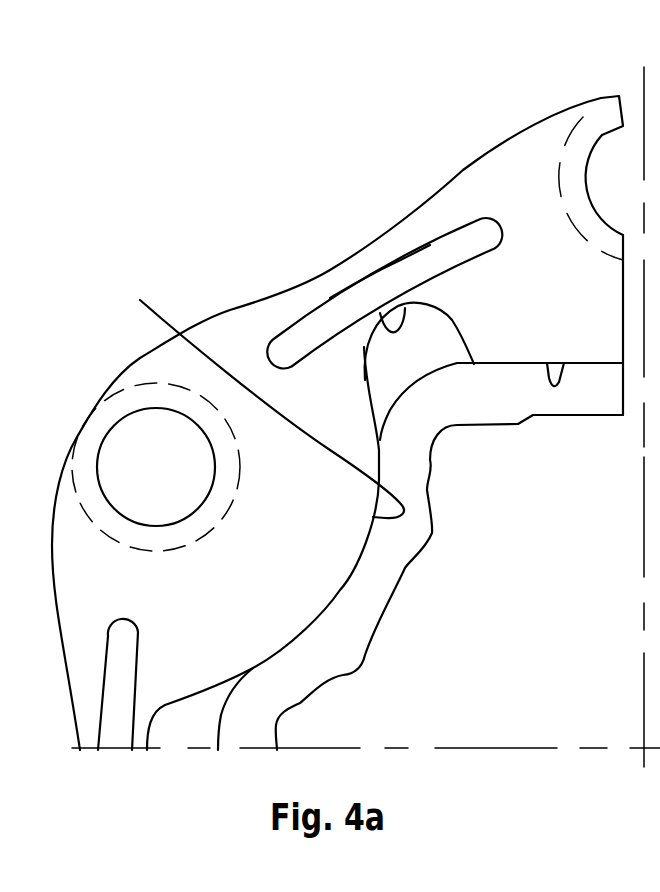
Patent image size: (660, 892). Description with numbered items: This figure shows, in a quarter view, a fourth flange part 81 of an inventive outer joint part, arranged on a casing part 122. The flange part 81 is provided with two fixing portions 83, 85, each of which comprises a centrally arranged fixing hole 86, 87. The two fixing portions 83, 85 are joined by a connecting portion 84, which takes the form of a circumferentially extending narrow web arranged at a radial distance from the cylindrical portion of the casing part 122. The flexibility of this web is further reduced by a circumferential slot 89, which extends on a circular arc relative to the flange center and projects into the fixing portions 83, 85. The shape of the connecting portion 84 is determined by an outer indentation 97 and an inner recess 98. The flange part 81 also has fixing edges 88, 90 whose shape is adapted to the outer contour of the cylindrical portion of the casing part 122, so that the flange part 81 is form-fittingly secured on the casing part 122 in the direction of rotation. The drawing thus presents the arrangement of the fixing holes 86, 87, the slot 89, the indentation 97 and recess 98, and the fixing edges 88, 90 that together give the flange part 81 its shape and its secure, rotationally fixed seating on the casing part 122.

The fourth flange part 81 is at (190, 220).
The fixing portion 83 is at (163, 367).
The connecting portion 84 is at (392, 244).
The fixing portion 85 is at (553, 137).
The fixing hole 86 is at (136, 434).
The fixing hole 87 is at (608, 155).
The fixing edge 88 is at (141, 301).
The circumferential slot 89 is at (293, 338).
The fixing edge 90 is at (549, 378).
The outer indentation 97 is at (358, 253).
The inner recess 98 is at (380, 314).
The casing part 122 is at (440, 354).